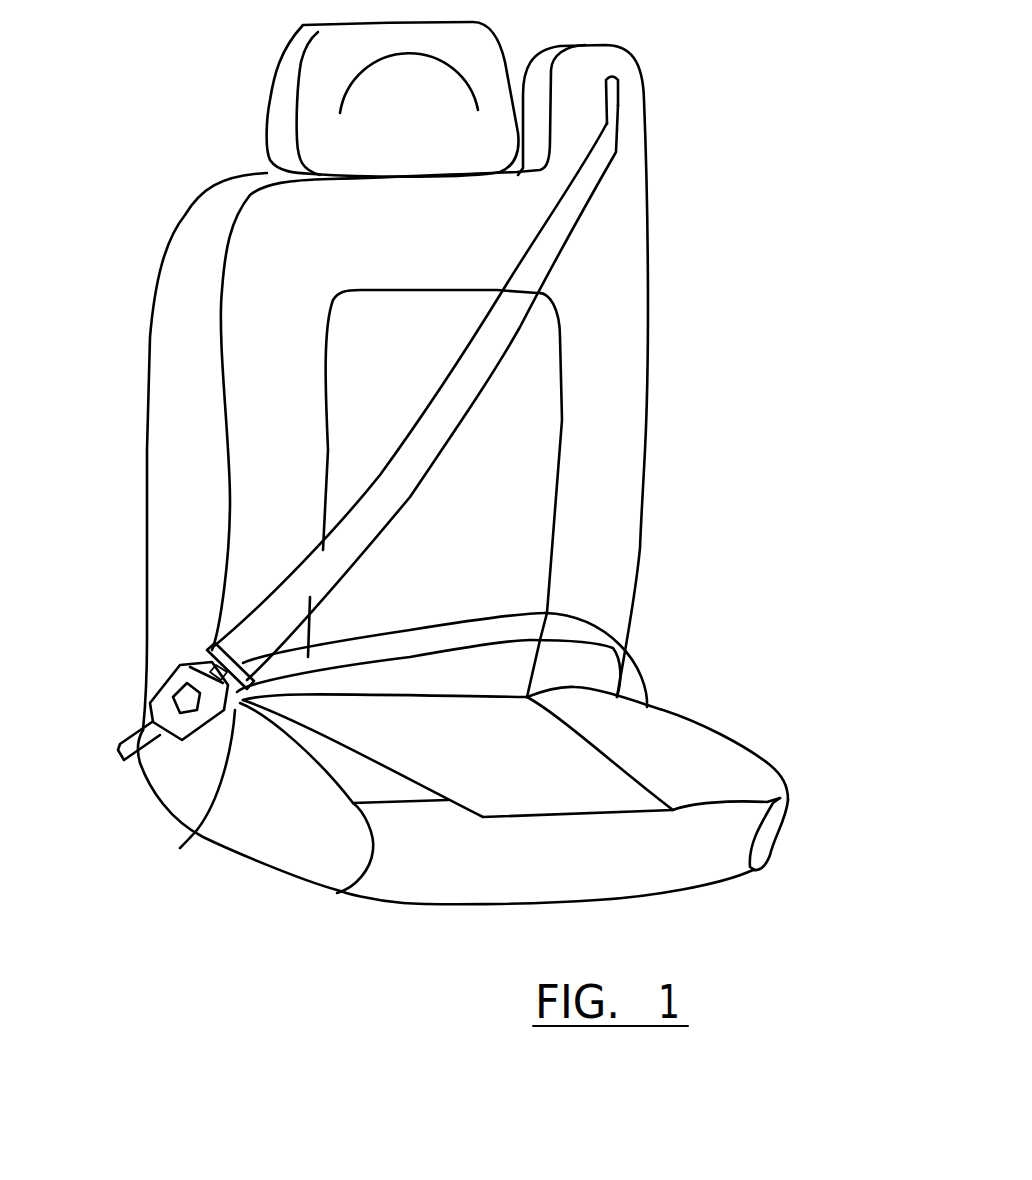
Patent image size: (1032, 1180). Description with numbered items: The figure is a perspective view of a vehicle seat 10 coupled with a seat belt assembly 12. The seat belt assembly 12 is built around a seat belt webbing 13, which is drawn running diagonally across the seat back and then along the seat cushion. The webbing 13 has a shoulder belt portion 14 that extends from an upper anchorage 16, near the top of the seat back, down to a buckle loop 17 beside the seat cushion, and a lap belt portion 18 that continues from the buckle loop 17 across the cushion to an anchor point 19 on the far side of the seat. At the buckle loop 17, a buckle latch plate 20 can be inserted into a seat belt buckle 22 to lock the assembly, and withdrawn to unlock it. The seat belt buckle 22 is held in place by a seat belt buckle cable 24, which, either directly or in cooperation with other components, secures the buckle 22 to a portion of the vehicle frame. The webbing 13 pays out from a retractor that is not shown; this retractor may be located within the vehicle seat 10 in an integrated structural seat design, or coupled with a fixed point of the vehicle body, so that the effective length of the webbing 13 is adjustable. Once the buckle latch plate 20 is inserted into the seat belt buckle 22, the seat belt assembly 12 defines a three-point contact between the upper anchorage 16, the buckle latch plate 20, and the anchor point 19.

The vehicle seat 10 is at (473, 457).
The seat belt assembly 12 is at (393, 428).
The seat belt webbing 13 is at (355, 507).
The shoulder belt portion 14 is at (510, 340).
The upper anchorage 16 is at (619, 103).
The buckle loop 17 is at (207, 650).
The lap belt portion 18 is at (570, 613).
The anchor point 19 is at (647, 707).
The buckle latch plate 20 is at (195, 832).
The seat belt buckle 22 is at (205, 722).
The seat belt buckle cable 24 is at (125, 722).